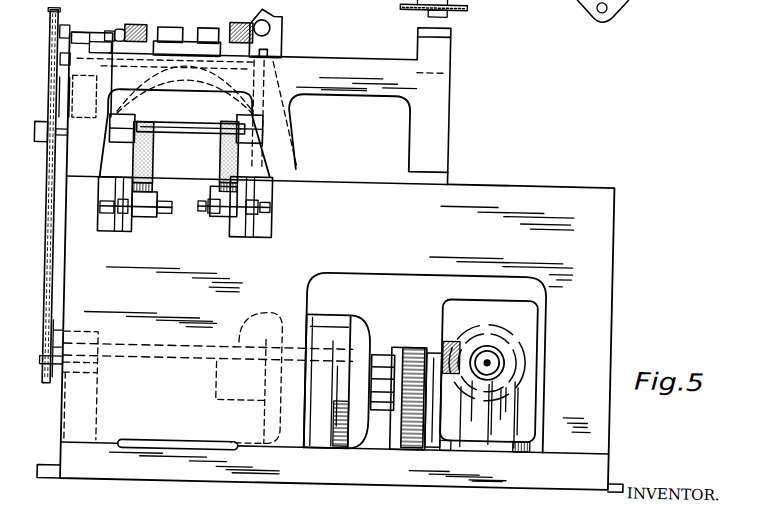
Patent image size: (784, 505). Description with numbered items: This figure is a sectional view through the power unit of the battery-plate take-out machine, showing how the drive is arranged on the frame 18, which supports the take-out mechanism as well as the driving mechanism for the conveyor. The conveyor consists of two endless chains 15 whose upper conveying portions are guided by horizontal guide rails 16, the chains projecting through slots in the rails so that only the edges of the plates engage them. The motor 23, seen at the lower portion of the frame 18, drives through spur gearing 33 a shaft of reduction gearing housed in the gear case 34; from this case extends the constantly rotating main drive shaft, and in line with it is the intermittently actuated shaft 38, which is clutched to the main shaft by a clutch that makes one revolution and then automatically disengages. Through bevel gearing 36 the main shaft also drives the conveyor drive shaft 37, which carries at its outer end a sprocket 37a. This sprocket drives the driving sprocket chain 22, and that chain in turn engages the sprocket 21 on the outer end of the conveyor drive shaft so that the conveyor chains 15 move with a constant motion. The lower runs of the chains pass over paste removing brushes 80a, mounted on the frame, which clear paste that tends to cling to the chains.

The endless chains 15 is at (217, 21).
The horizontal guide rails 16 is at (272, 37).
The frame 18 is at (599, 228).
The sprocket 21 is at (63, 25).
The driving sprocket chain 22 is at (41, 278).
The motor 23 is at (357, 326).
The spur gearing 33 is at (421, 440).
The gear case 34 is at (529, 315).
The bevel gearing 36 is at (522, 333).
The conveyor drive shaft 37 is at (137, 356).
The sprocket 37a is at (43, 402).
The intermittently actuated shaft 38 is at (485, 354).
The paste removing brushes 80a is at (213, 169).